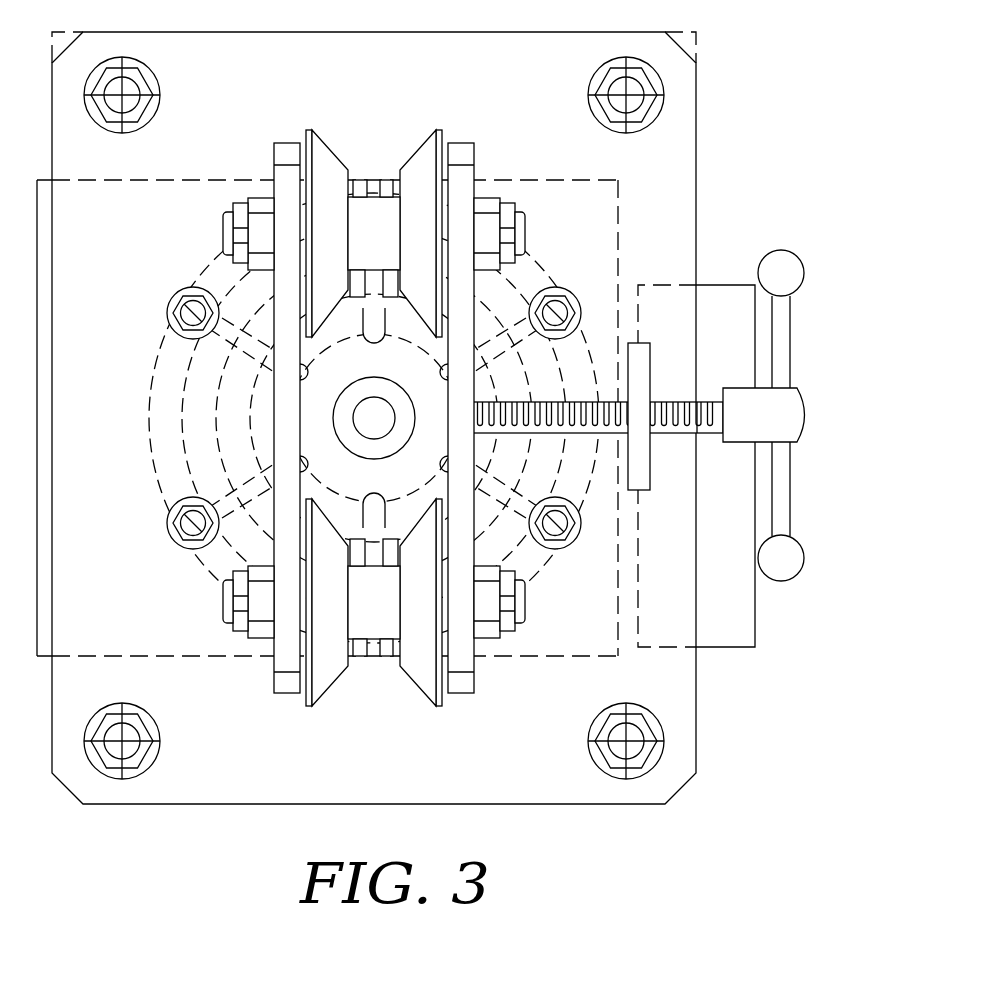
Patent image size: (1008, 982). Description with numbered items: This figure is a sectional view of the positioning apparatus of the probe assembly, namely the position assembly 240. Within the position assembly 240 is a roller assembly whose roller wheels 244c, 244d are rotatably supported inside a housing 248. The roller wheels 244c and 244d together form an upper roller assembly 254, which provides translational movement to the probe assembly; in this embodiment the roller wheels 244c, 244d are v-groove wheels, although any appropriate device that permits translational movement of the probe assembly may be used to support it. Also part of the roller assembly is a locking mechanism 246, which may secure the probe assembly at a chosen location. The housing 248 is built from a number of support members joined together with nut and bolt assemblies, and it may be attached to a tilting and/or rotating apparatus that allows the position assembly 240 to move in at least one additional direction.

The position assembly 240 is at (714, 100).
The roller wheel 244c is at (413, 146).
The roller wheel 244d is at (415, 687).
The locking mechanism 246 is at (788, 363).
The housing 248 is at (700, 717).
The upper roller assembly 254 is at (310, 708).